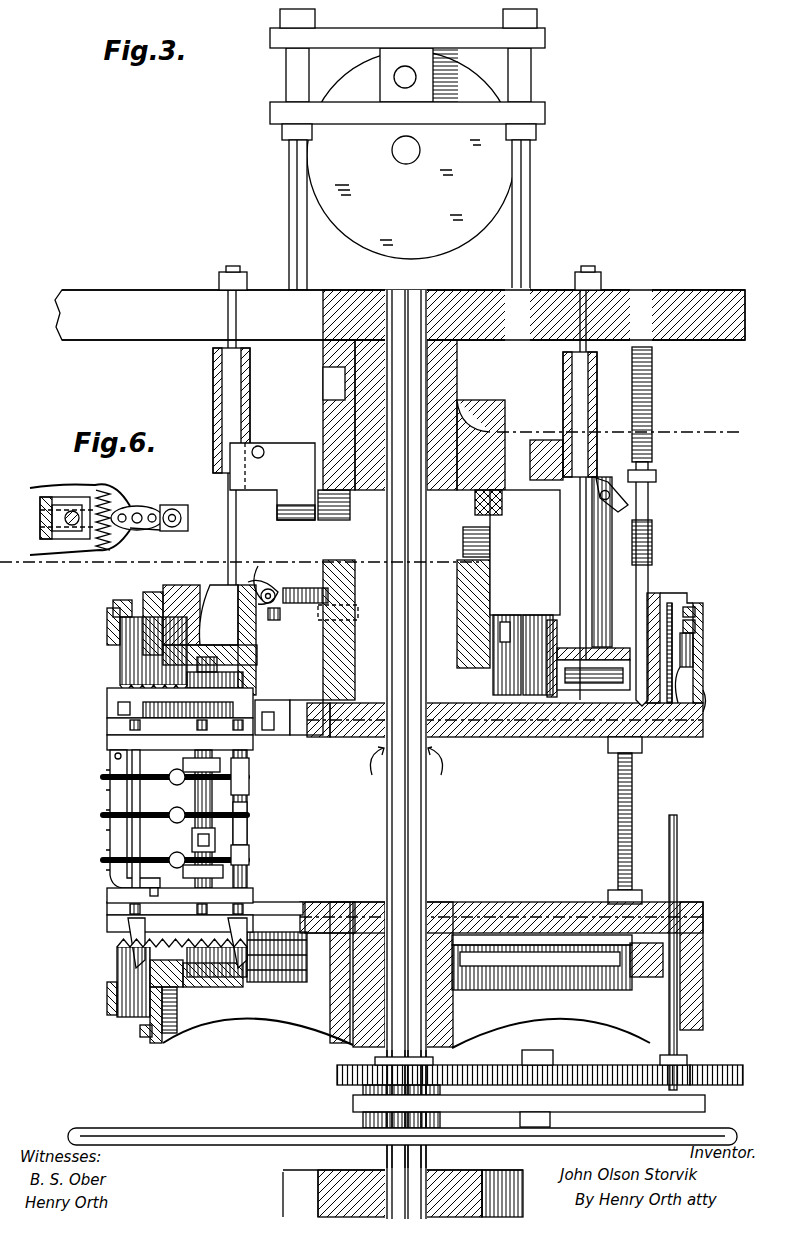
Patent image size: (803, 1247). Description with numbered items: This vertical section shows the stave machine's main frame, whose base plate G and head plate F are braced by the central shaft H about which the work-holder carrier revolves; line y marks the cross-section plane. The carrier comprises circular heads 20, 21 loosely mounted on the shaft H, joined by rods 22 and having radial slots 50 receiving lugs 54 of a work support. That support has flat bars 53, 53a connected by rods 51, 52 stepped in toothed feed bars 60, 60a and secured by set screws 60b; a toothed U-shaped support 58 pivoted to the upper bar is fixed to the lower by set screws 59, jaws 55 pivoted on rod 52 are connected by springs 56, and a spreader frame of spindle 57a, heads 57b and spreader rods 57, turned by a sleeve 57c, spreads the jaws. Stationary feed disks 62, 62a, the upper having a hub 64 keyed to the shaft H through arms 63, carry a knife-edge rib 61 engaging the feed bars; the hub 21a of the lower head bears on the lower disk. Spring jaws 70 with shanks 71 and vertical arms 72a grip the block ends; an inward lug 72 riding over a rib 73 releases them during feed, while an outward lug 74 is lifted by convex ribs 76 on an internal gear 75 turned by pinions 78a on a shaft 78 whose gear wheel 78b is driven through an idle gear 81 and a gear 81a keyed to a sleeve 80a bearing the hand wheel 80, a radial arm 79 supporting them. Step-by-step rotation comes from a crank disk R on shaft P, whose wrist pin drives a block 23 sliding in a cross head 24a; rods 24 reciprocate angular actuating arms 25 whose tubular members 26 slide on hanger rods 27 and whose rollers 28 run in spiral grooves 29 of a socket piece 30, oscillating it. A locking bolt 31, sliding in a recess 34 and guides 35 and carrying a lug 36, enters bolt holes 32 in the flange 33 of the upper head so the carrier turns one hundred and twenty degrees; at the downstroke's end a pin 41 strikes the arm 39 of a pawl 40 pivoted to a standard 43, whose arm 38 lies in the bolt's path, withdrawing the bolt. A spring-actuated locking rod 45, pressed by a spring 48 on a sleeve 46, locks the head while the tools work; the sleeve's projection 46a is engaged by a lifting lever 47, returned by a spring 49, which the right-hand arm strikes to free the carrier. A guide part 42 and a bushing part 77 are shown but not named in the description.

In FIG. 3, the table F is at (146, 300).
In FIG. 3, the disc R is at (411, 155).
In FIG. 3, the pin P is at (407, 165).
In FIG. 3, the shaft H is at (417, 832).
In FIG. 3, the base G is at (283, 1193).
In FIG. 3, the section line y is at (370, 505).
In FIG. 3, the base plate 20 is at (520, 738).
In FIG. 3, the lower plate 21 is at (500, 908).
In FIG. 3, the bearing boss 21a is at (432, 935).
In FIG. 3, the tie rod 22 is at (632, 782).
In FIG. 3, the pin 23 is at (419, 80).
In FIG. 3, the rod 24 is at (299, 265).
In FIG. 3, the cross bars 24a is at (537, 43).
In FIG. 3, the block 25 is at (272, 481).
In FIG. 3, the sleeve 26 is at (250, 388).
In FIG. 3, the rod 27 is at (600, 545).
In FIG. 3, the collar 28 is at (318, 515).
In FIG. 3, the collar 29 is at (490, 548).
In FIG. 3, the bearing 30 is at (490, 576).
In FIG. 3, the plate 31 is at (295, 702).
In FIG. 3, the bolt 32 is at (507, 643).
In FIG. 3, the bolt 33 is at (268, 732).
In FIG. 3, the pin 34 is at (345, 625).
In FIG. 3, the plate 35 is at (327, 702).
In FIG. 3, the slide 36 is at (305, 603).
In FIG. 3, the pin 38 is at (273, 622).
In FIG. 3, the arm 39 is at (258, 568).
In FIG. 3, the pivot 40 is at (274, 590).
In FIG. 3, the screw 41 is at (258, 458).
In FIG. 3, the guide 42 is at (222, 588).
In FIG. 3, the cam 43 is at (218, 615).
In FIG. 3, the rod 45 is at (650, 497).
In FIG. 3, the pawl 46 is at (622, 486).
In FIG. 3, the collar 46a is at (656, 476).
In FIG. 3, the pivot pin 47 is at (605, 502).
In FIG. 3, the spring 48 is at (655, 418).
In FIG. 3, the spring 49 is at (654, 522).
In FIG. 3, the block 50 is at (297, 735).
In FIG. 3, the rod 51 is at (148, 819).
In FIG. 6, the rod 51 is at (72, 512).
In FIG. 3, the roller 52 is at (249, 845).
In FIG. 6, the roller 52 is at (174, 514).
In FIG. 3, the plate 53 is at (107, 745).
In FIG. 3, the plate 53a is at (107, 892).
In FIG. 3, the bar 54 is at (165, 920).
In FIG. 3, the spring arm 55 is at (250, 780).
In FIG. 6, the spring arm 55 is at (100, 485).
In FIG. 3, the spring arm 56 is at (192, 836).
In FIG. 6, the spring arm 56 is at (125, 541).
In FIG. 3, the lever 57 is at (195, 800).
In FIG. 6, the lever 57 is at (135, 512).
In FIG. 3, the pin 57a is at (240, 985).
In FIG. 6, the pin 57a is at (139, 515).
In FIG. 3, the lever arm 57b is at (223, 876).
In FIG. 6, the lever arm 57b is at (160, 531).
In FIG. 3, the collar 57c is at (249, 864).
In FIG. 3, the bracket 58 is at (110, 835).
In FIG. 6, the bracket 58 is at (42, 520).
In FIG. 3, the pin 59 is at (158, 893).
In FIG. 3, the frame 60 is at (120, 690).
In FIG. 3, the frame 60a is at (117, 945).
In FIG. 3, the bolt 60b is at (118, 708).
In FIG. 3, the bellows 61 is at (190, 1003).
In FIG. 3, the nut 62 is at (238, 590).
In FIG. 3, the bearing 62a is at (495, 985).
In FIG. 3, the sleeve 63 is at (606, 562).
In FIG. 3, the housing 64 is at (452, 424).
In FIG. 3, the casing 70 is at (712, 712).
In FIG. 3, the rod 71 is at (580, 700).
In FIG. 3, the cup 72 is at (662, 594).
In FIG. 3, the lining 72a is at (694, 665).
In FIG. 3, the block 73 is at (150, 594).
In FIG. 3, the lip 74 is at (696, 603).
In FIG. 3, the ring 75 is at (696, 624).
In FIG. 3, the ring 76 is at (696, 610).
In FIG. 3, the bushing 77 is at (694, 645).
In FIG. 3, the shaft 78 is at (678, 855).
In FIG. 3, the bearing 78a is at (652, 990).
In FIG. 3, the pinion 78b is at (743, 1078).
In FIG. 3, the plate 79 is at (597, 1100).
In FIG. 3, the rod 80 is at (180, 1128).
In FIG. 3, the hub 80a is at (377, 1088).
In FIG. 3, the gear 81 is at (590, 1065).
In FIG. 3, the hub 81a is at (337, 1072).